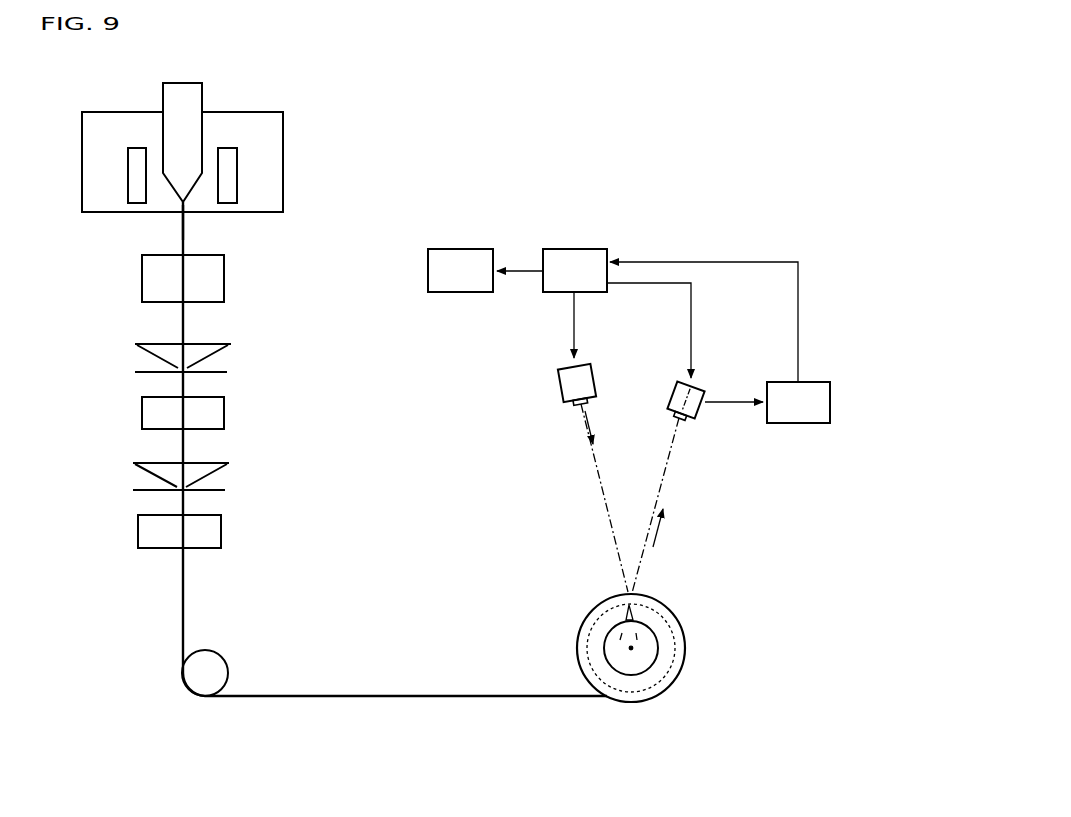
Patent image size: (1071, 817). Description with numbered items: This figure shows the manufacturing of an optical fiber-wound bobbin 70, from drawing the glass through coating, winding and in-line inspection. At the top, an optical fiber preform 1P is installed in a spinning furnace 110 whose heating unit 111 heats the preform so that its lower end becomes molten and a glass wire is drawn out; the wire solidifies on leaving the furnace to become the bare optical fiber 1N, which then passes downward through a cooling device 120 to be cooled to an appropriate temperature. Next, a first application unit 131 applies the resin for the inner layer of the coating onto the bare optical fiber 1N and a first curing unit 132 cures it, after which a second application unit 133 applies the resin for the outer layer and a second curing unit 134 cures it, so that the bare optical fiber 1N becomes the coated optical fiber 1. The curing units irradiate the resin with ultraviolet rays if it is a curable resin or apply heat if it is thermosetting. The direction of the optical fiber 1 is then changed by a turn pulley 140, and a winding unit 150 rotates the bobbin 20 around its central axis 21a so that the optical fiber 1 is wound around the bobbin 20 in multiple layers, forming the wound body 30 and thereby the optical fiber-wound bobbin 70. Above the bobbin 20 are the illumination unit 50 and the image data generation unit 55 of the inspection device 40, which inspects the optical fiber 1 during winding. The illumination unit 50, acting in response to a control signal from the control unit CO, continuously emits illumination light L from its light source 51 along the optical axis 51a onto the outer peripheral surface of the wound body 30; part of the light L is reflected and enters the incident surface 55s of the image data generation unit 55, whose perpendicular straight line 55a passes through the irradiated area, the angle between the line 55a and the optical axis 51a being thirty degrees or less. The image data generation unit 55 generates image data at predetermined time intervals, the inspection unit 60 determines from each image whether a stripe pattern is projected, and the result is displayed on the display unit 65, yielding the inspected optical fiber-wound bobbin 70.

The optical fiber 1 is at (180, 587).
The optical fiber preform 1P is at (183, 146).
The bare optical fiber 1N is at (182, 225).
The spinning furnace 110 is at (283, 130).
The heating unit 111 is at (232, 170).
The cooling device 120 is at (212, 273).
The first application unit 131 is at (205, 350).
The first curing unit 132 is at (212, 407).
The second application unit 133 is at (198, 470).
The second curing unit 134 is at (207, 535).
The turn pulley 140 is at (208, 663).
The bobbin 20 is at (573, 637).
The central axis 21a is at (628, 650).
The winding unit 150 is at (648, 652).
The wound body 30 is at (597, 601).
The optical fiber-wound bobbin 70 is at (685, 603).
The inspection device 40 is at (717, 217).
The illumination unit 50 is at (570, 385).
The light source 51 is at (578, 405).
The optical axis 51a is at (598, 465).
The image data generation unit 55 is at (680, 397).
The incident surface 55s is at (690, 422).
The straight line 55a is at (673, 455).
The inspection unit 60 is at (812, 417).
The display unit 65 is at (473, 258).
The control unit CO is at (583, 258).
The illumination light L is at (592, 423).